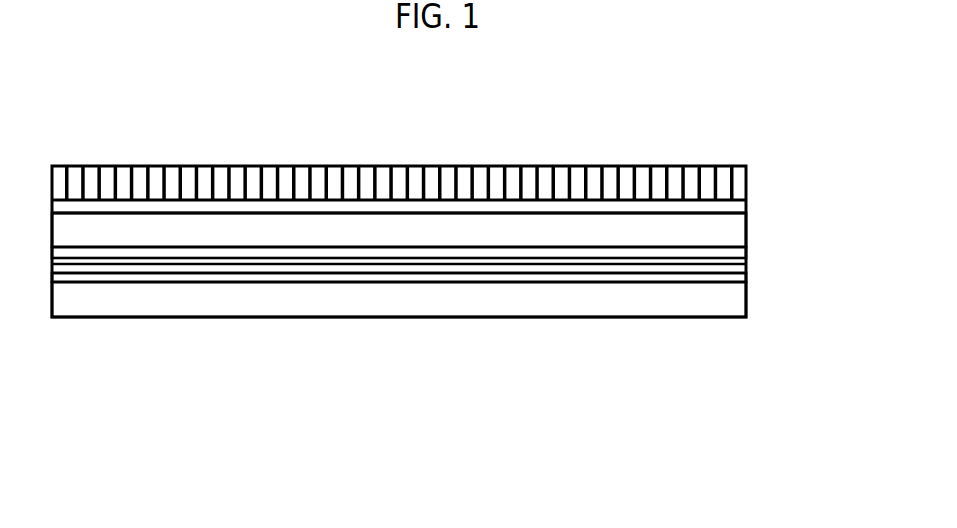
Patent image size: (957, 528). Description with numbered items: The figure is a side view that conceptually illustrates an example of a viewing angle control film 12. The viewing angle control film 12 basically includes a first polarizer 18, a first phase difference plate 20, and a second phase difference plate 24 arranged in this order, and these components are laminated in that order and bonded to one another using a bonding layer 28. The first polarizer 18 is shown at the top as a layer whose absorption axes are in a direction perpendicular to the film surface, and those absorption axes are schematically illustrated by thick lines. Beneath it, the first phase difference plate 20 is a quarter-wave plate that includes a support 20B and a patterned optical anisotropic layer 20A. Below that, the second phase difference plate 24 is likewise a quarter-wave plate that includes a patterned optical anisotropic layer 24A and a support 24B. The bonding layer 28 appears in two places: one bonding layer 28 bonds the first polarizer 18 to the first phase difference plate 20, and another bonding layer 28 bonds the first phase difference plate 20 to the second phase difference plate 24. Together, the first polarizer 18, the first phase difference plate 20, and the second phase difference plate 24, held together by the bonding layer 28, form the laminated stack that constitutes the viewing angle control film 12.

The viewing angle control film 12 is at (657, 131).
The first polarizer 18 is at (738, 183).
The bonding layer 28 is at (733, 207).
The first phase difference plate 20 is at (465, 225).
The support 20B is at (733, 230).
The patterned optical anisotropic layer 20A is at (733, 253).
The second phase difference plate 24 is at (465, 309).
The patterned optical anisotropic layer 24A is at (733, 275).
The support 24B is at (733, 302).